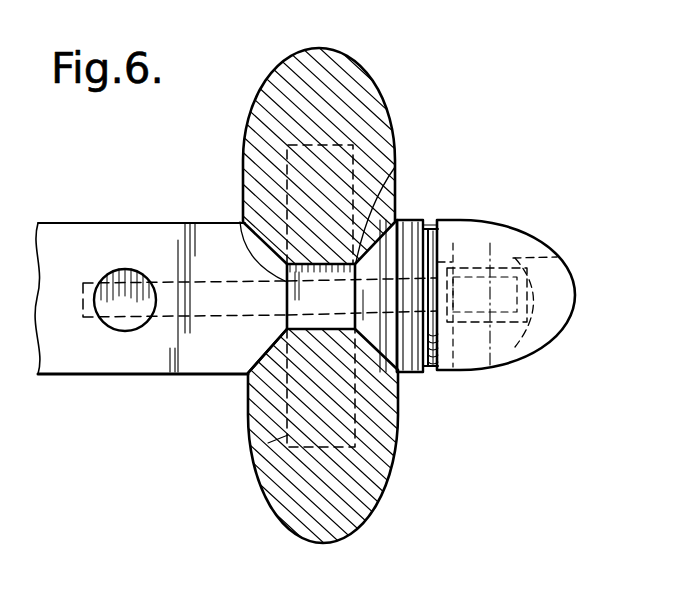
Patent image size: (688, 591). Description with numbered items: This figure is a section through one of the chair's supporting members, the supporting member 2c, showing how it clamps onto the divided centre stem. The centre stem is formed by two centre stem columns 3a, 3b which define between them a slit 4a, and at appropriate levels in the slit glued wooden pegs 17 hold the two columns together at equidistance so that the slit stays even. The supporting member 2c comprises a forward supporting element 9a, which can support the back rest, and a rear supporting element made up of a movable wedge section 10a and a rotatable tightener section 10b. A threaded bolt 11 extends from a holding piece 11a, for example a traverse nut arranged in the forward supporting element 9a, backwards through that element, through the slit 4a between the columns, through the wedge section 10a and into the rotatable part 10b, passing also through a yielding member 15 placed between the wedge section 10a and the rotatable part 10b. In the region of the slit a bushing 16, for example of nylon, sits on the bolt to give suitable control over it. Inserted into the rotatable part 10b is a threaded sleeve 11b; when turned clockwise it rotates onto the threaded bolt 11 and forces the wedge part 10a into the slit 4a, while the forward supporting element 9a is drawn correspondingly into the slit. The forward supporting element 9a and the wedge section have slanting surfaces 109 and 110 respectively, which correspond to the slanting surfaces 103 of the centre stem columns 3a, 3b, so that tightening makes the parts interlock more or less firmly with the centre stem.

The forward supporting element 9a is at (127, 242).
The holding piece 11a is at (110, 330).
The threaded bolt 11 is at (557, 257).
The centre stem column 3a is at (364, 94).
The centre stem column 3b is at (372, 501).
The slanting surfaces 103 is at (394, 167).
The bushing 16 is at (240, 222).
The movable wedge section 10a is at (406, 232).
The slit 4a is at (353, 315).
The yielding member 15 is at (432, 368).
The rotatable section 10b is at (517, 243).
The threaded sleeve 11b is at (545, 352).
The supporting member 2c is at (478, 213).
The slanting surface 110 is at (403, 364).
The slanting surface 109 is at (250, 392).
The wooden pegs 17 is at (268, 443).